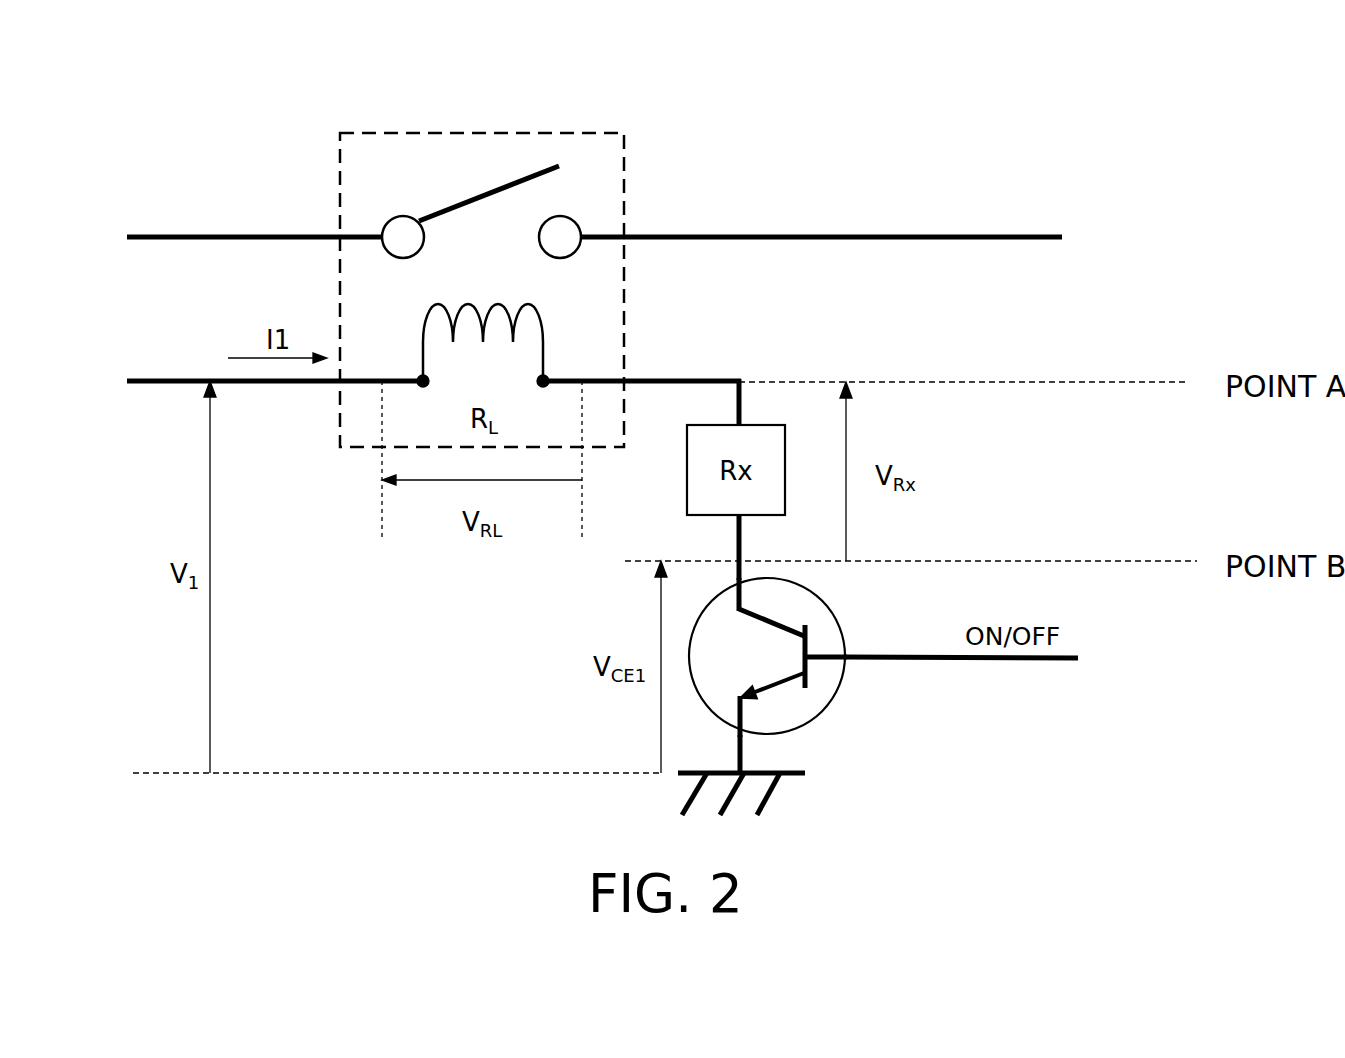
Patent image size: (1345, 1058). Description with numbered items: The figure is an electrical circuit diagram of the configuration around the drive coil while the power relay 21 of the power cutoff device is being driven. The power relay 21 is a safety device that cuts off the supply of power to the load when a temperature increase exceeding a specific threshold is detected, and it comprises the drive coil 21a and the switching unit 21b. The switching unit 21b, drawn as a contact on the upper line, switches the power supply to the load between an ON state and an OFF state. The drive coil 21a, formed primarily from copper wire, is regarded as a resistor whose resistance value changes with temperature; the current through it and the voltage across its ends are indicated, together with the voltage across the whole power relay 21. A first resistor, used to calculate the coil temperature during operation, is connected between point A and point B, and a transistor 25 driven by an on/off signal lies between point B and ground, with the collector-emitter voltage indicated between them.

The power relay 21 is at (515, 130).
The drive coil 21a is at (571, 318).
The switching unit 21b is at (451, 181).
The transistor 25 is at (847, 715).